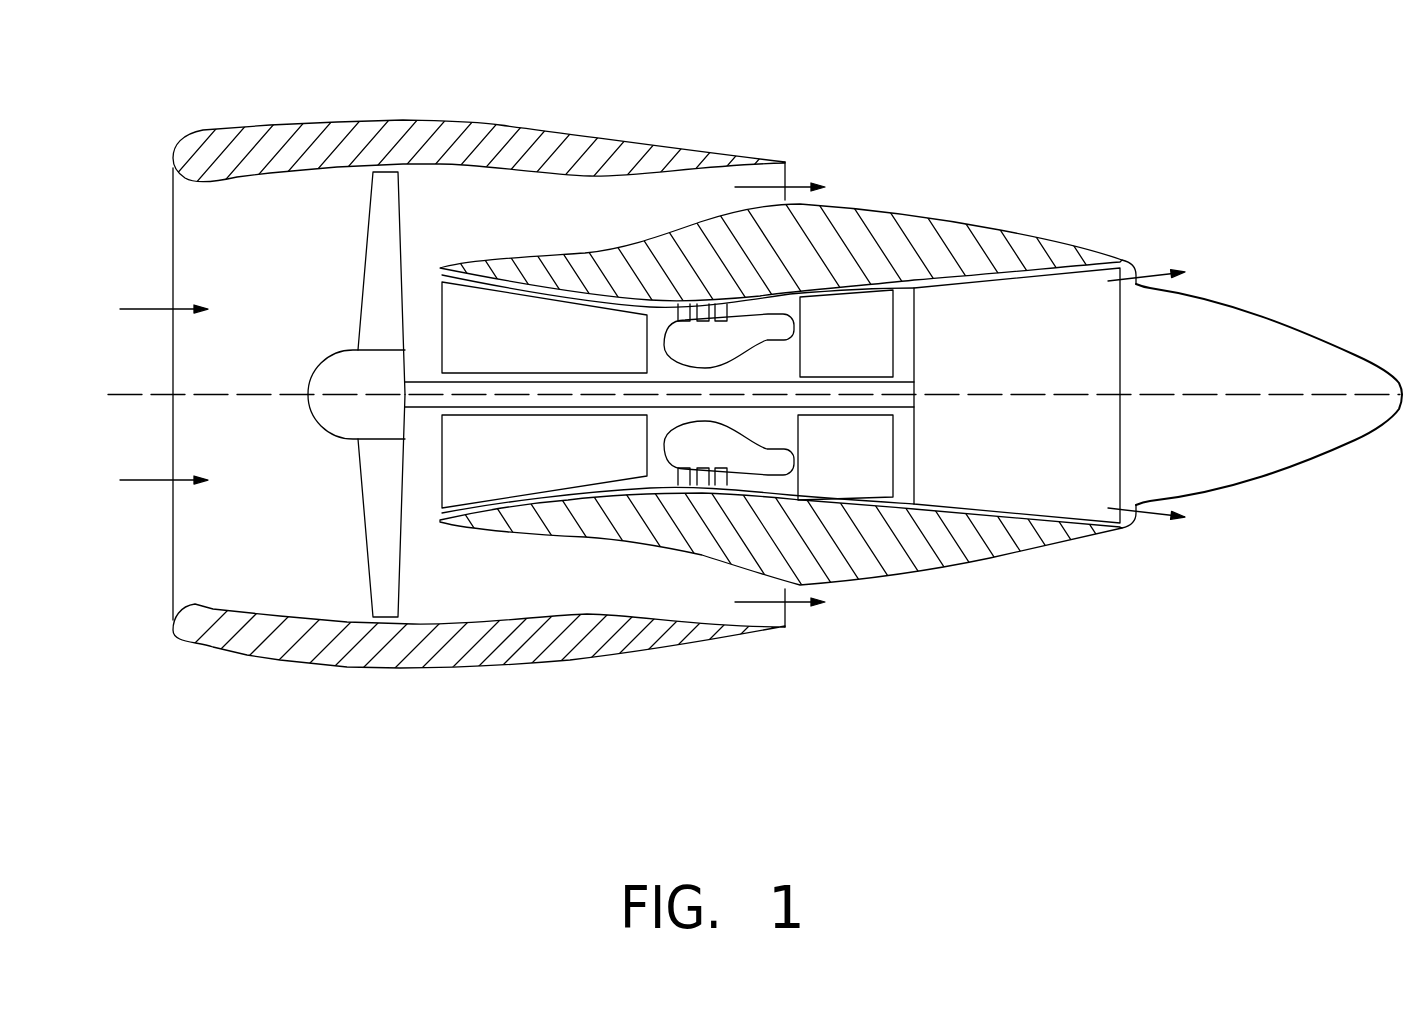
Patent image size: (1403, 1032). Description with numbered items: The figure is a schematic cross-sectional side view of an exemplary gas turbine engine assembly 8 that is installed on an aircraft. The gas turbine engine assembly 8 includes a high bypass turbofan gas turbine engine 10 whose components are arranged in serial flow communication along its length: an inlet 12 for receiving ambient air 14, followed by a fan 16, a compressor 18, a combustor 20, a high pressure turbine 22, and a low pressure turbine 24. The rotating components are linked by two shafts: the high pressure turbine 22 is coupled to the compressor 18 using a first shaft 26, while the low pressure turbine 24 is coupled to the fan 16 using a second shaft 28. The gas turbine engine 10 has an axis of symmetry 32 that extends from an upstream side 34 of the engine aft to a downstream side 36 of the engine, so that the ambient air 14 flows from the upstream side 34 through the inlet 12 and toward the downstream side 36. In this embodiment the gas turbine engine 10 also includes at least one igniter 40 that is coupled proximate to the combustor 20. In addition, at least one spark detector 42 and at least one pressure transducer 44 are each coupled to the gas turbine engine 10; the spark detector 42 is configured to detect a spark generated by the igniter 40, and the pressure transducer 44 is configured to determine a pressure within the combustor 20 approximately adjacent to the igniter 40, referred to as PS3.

The gas turbine engine assembly 8 is at (1060, 98).
The gas turbine engine 10 is at (822, 68).
The inlet 12 is at (182, 177).
The ambient air 14 is at (150, 308).
The fan 16 is at (418, 232).
The compressor 18 is at (512, 342).
The combustor 20 is at (677, 450).
The high pressure turbine 22 is at (865, 350).
The low pressure turbine 24 is at (1027, 340).
The first shaft 26 is at (662, 378).
The second shaft 28 is at (903, 410).
The axis of symmetry 32 is at (218, 393).
The upstream side 34 is at (270, 708).
The downstream side 36 is at (1193, 562).
The igniter 40 is at (683, 304).
The spark detector 42 is at (702, 304).
The pressure transducer 44 is at (722, 304).